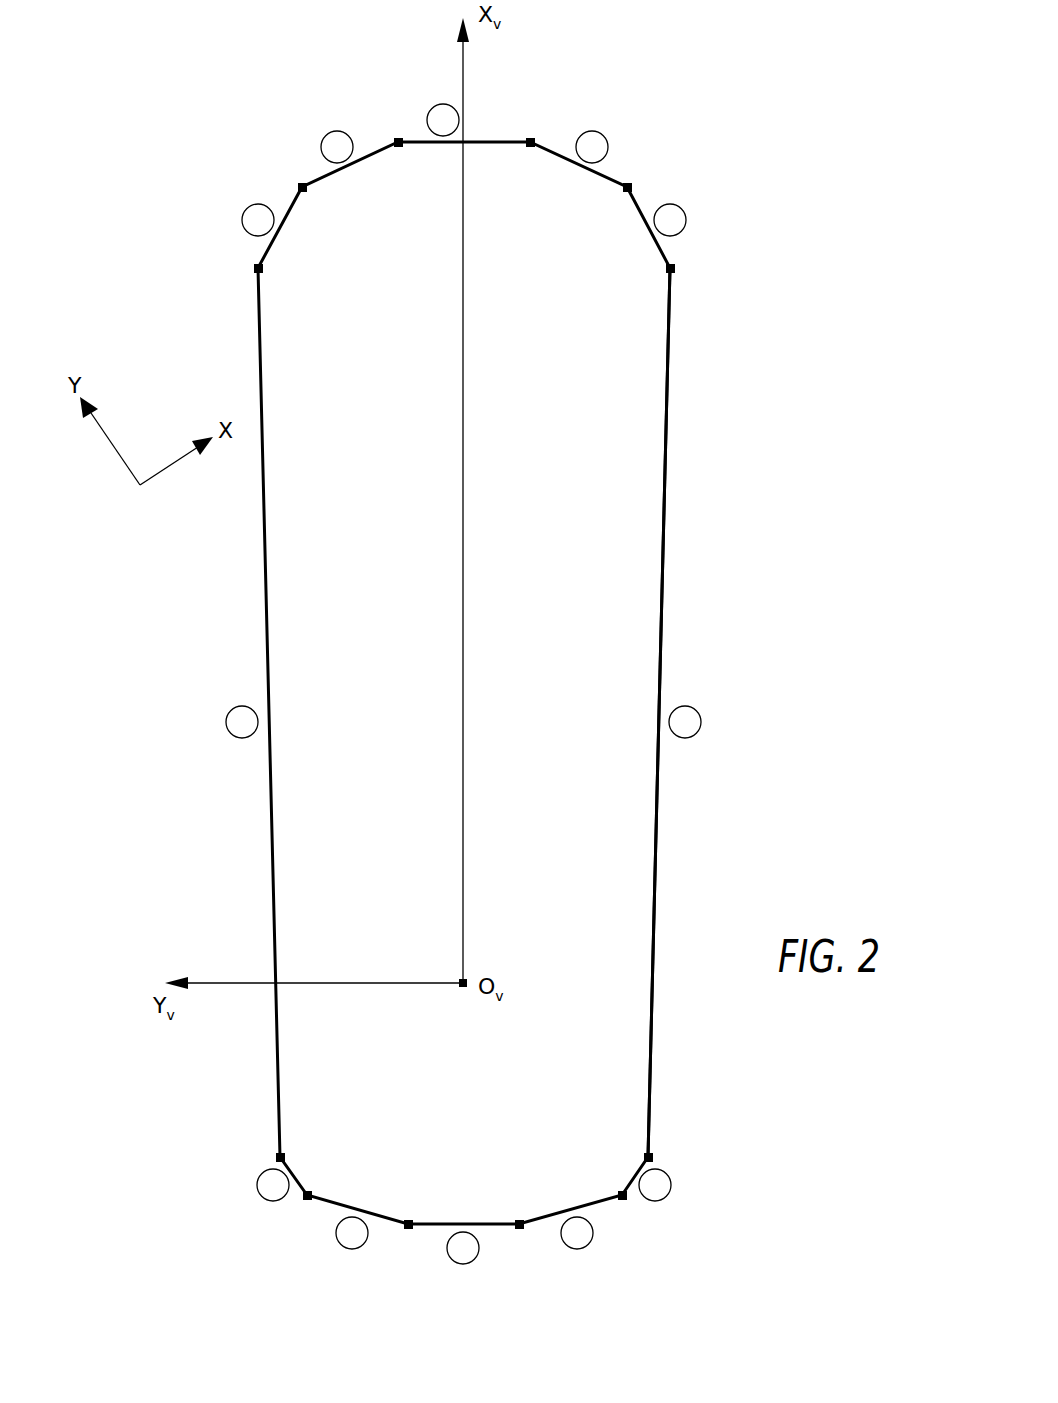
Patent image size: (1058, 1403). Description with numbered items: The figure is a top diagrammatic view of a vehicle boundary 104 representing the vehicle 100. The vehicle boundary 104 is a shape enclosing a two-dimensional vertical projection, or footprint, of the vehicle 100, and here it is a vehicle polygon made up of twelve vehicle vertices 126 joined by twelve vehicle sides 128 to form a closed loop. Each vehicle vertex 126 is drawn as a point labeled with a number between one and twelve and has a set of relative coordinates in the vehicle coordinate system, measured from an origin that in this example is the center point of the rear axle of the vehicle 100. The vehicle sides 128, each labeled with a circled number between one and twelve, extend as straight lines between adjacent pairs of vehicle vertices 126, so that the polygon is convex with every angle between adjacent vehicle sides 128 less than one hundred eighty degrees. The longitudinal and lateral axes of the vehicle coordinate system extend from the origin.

The vehicle 100 is at (158, 70).
The vehicle boundary 104 is at (668, 403).
The vehicle vertices 126 is at (300, 186).
The vehicle sides 128 is at (350, 166).